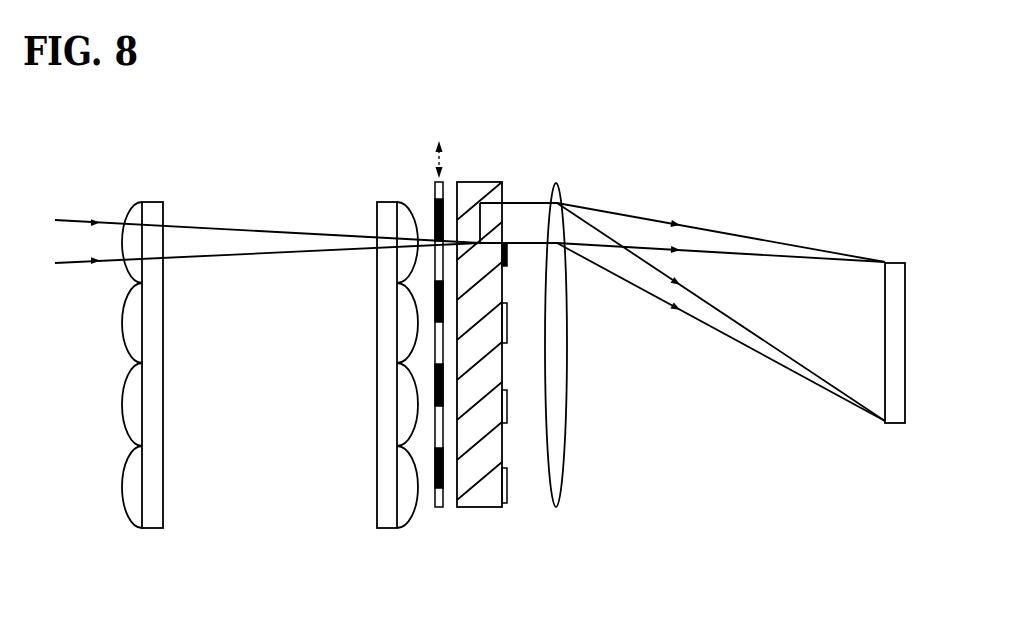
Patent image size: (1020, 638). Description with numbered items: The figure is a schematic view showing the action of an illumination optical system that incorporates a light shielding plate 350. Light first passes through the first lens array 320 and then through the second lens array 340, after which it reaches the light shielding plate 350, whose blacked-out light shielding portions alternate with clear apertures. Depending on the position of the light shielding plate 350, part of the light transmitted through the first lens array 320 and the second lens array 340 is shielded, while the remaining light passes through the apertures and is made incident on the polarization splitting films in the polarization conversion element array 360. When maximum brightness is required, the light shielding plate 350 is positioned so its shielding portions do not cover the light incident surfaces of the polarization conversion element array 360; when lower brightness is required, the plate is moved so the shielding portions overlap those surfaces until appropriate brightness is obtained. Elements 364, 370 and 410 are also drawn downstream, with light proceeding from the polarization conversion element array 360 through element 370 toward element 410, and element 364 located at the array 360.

The first lens array 320 is at (152, 202).
The second lens array 340 is at (387, 202).
The light shielding plate 350 is at (440, 507).
The polarization conversion element array 360 is at (487, 182).
The reflecting elements of block 364 is at (507, 503).
The condensing lens 370 is at (553, 190).
The light valves 410R, 410G, 410B 410 is at (888, 262).